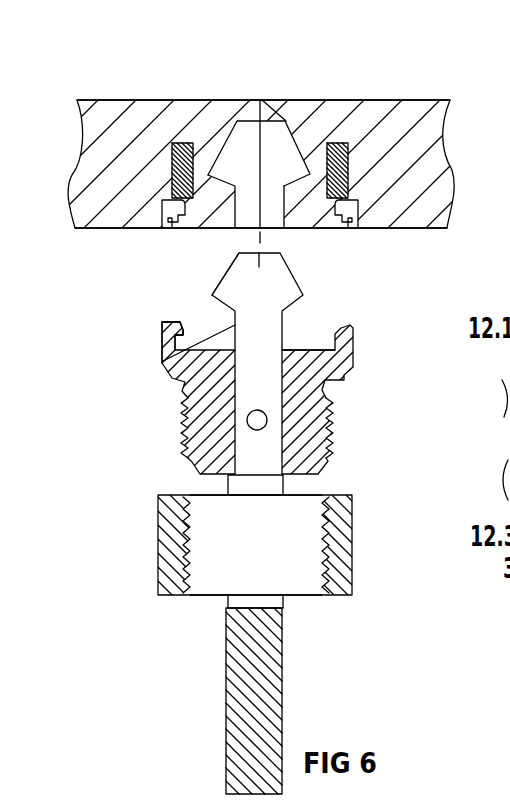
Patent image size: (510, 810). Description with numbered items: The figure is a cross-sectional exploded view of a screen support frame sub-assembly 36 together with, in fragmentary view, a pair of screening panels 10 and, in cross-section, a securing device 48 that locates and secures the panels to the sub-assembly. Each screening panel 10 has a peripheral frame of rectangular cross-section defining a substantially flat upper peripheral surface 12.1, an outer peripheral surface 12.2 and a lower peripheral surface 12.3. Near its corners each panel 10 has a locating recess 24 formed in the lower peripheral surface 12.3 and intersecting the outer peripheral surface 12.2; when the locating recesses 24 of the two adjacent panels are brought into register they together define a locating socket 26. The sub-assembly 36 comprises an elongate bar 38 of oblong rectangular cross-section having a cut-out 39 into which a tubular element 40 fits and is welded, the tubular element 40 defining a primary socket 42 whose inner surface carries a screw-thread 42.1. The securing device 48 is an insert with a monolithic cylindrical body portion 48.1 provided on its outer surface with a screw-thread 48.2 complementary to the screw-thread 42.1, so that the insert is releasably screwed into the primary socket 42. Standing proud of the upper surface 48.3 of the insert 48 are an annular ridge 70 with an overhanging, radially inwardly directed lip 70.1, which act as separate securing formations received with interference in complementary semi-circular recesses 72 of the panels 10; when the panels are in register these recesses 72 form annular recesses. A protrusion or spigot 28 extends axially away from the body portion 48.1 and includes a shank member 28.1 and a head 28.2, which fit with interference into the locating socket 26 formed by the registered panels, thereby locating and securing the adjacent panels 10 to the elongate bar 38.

The screening panel 10 is at (185, 73).
The upper peripheral surface 12.1 is at (146, 99).
The outer peripheral surface 12.2 is at (266, 100).
The lower peripheral surface 12.3 is at (428, 230).
The locating socket 26 is at (272, 168).
The locating recess 24 is at (236, 218).
The semi-circular recess 72 is at (168, 229).
The protrusion or spigot 28 is at (306, 290).
The shank member 28.1 is at (163, 361).
The head 28.2 is at (219, 283).
The securing device 48 is at (352, 407).
The cylindrical body portion 48.1 is at (303, 446).
The screw-thread 48.2 is at (181, 425).
The upper surface 48.3 is at (302, 347).
The annular ridge 70 is at (161, 343).
The overhanging radially inwardly directed lip 70.1 is at (176, 321).
The screen support frame sub-assembly 36 is at (128, 541).
The tubular element 40 is at (352, 532).
The primary socket 42 is at (219, 565).
The screw-thread 42.1 is at (189, 547).
The cut-out 39 is at (272, 602).
The elongate bar 38 is at (282, 698).